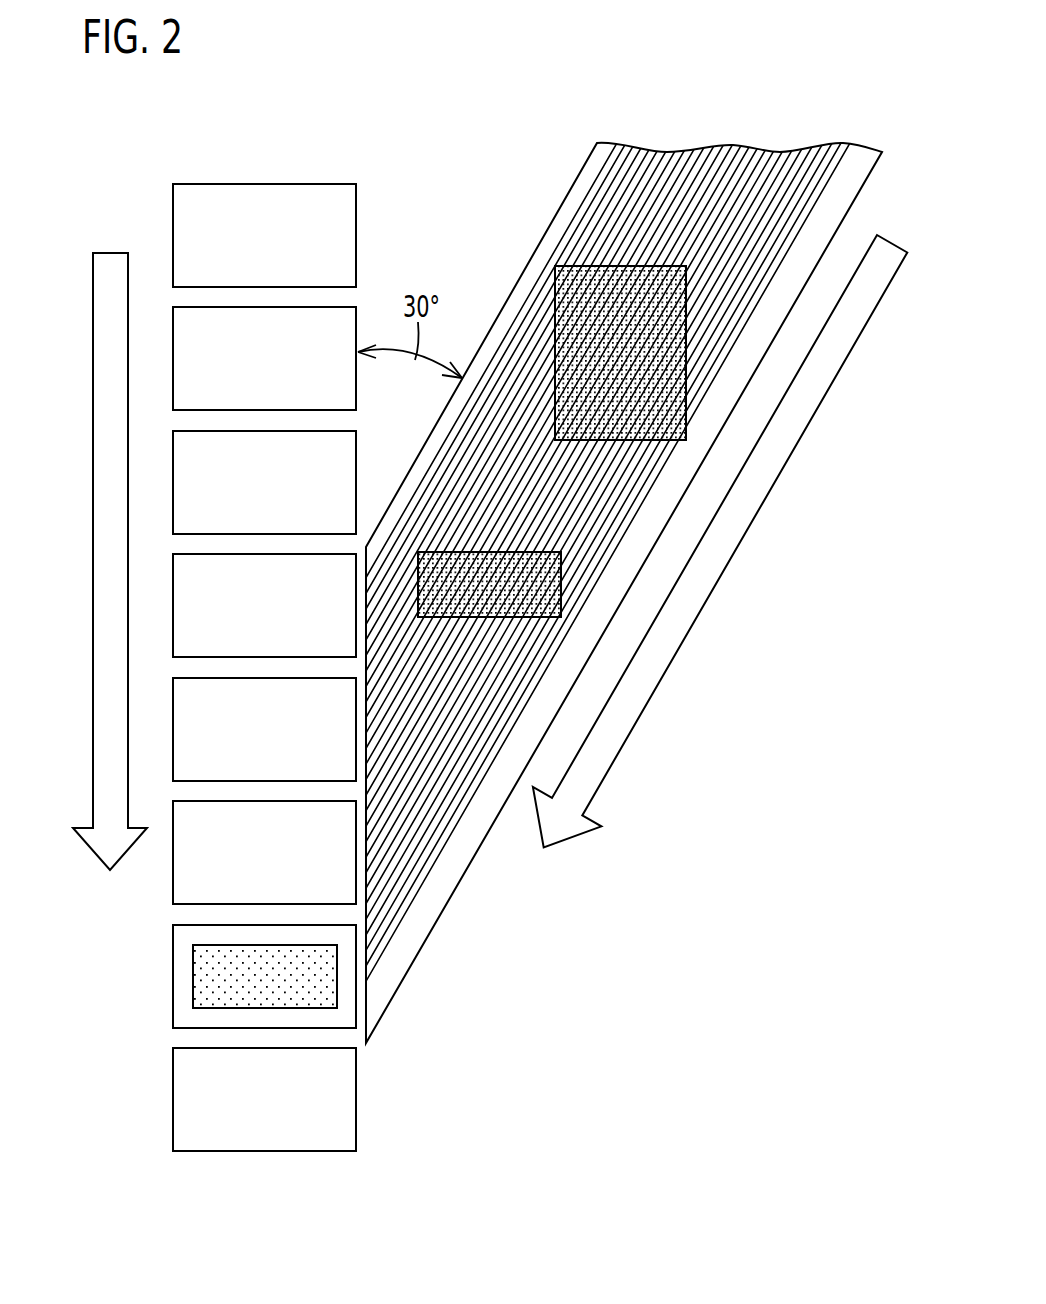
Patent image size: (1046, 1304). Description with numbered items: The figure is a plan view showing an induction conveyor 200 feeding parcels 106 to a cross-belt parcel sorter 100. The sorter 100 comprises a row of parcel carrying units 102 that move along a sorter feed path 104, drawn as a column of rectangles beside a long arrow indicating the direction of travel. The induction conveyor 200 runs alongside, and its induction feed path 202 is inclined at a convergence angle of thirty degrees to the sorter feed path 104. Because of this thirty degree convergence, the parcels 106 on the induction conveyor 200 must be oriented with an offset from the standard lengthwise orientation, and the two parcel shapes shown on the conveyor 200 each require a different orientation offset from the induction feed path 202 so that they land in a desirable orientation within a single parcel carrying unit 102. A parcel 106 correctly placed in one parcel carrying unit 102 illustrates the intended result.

The cross-belt parcel sorter 100 is at (150, 232).
The parcel carrying unit 102 is at (317, 225).
The feed path 104 is at (112, 492).
The parcel 106 is at (582, 303).
The induction conveyor 200 is at (568, 191).
The induction feed path 202 is at (697, 588).